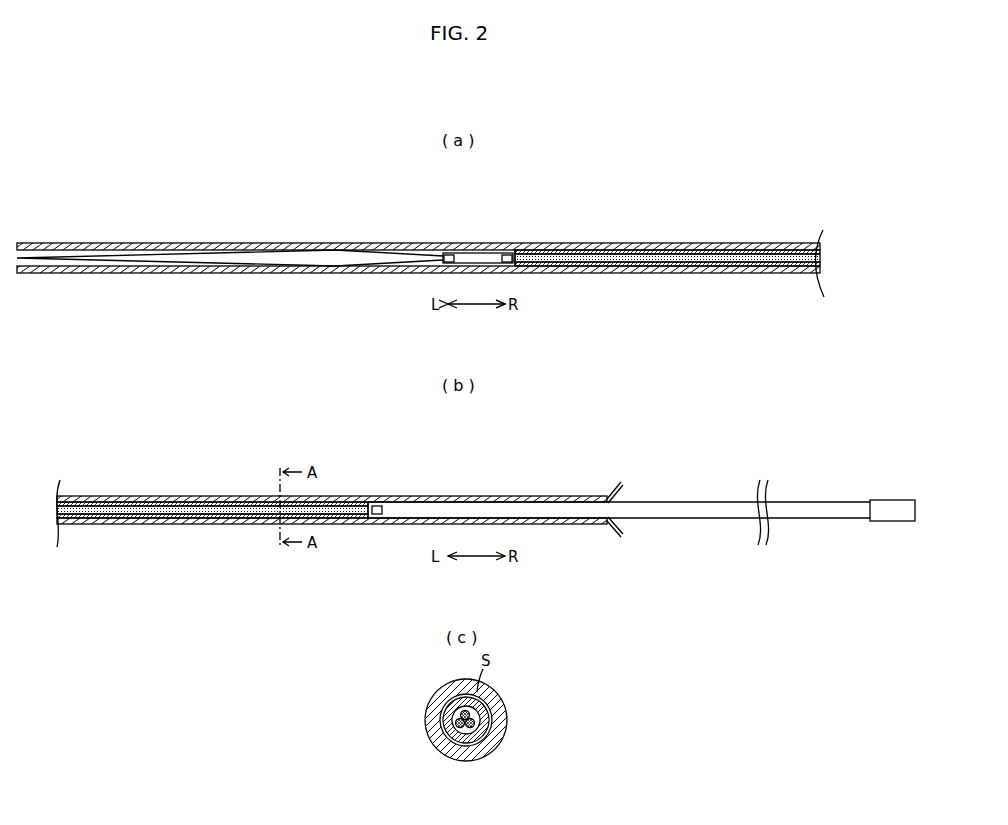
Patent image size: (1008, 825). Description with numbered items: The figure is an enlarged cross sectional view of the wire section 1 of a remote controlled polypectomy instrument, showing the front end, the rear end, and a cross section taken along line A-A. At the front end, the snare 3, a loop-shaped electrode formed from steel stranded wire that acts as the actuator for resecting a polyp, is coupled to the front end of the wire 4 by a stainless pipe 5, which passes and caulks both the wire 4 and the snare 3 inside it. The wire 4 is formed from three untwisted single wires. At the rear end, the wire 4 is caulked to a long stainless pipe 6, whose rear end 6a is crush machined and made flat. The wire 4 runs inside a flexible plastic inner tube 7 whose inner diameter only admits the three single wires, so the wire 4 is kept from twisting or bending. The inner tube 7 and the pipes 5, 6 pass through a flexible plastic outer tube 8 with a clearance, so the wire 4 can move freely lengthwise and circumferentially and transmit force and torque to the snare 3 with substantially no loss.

The wire section 1 is at (570, 201).
The snare 3 is at (78, 257).
The wire 4 is at (630, 258).
The stainless pipe 5 is at (476, 254).
The long stainless pipe 6 is at (503, 505).
The rear end of the pipe 6a is at (893, 500).
The inner tube 7 is at (700, 250).
The outer tube 8 is at (758, 243).